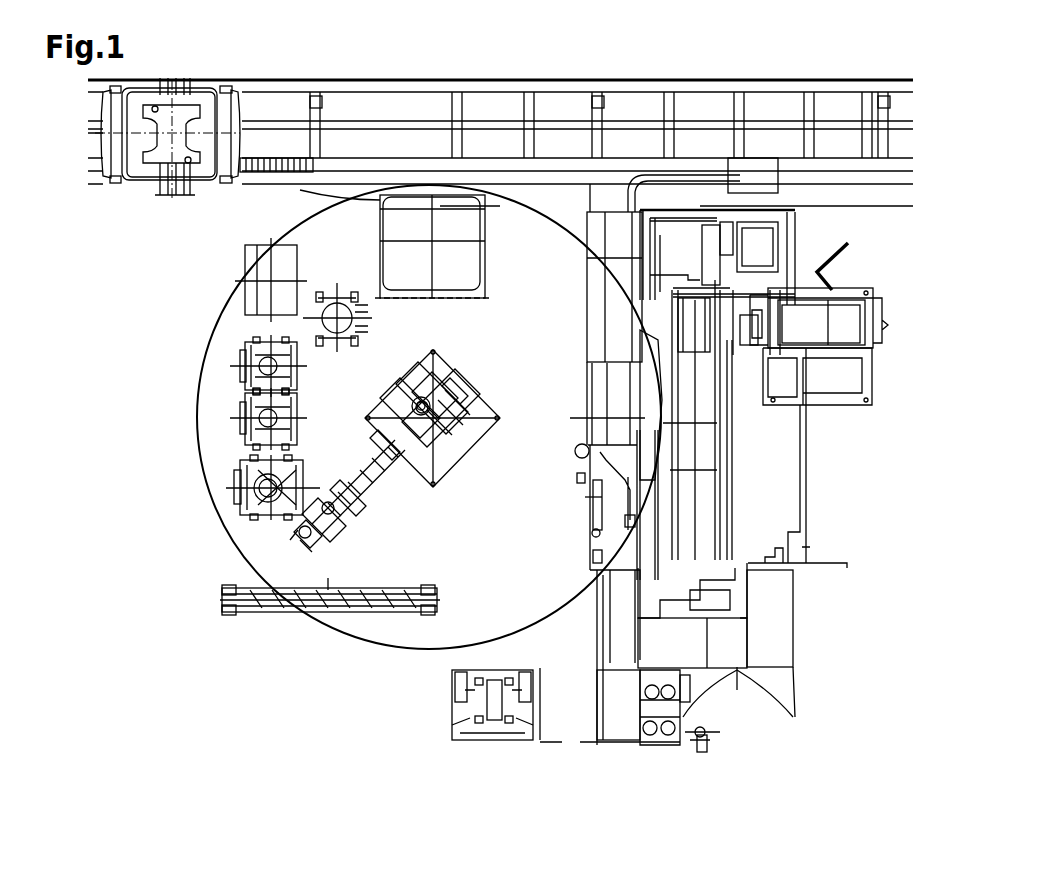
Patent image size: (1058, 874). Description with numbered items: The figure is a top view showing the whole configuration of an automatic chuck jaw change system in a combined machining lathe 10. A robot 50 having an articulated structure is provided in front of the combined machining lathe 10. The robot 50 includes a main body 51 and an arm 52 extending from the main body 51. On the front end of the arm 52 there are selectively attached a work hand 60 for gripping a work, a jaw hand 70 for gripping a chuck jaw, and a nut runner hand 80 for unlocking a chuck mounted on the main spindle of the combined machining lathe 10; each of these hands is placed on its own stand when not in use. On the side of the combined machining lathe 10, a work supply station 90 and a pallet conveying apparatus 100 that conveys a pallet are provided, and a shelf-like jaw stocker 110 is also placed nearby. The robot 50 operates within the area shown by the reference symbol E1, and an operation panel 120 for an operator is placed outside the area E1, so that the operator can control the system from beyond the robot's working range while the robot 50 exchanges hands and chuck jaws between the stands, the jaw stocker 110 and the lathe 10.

The combined machining lathe 10 is at (822, 497).
The robot 50 is at (462, 465).
The main body 51 is at (450, 396).
The arm 52 is at (360, 497).
The work hand 60 is at (245, 505).
The jaw hand 70 is at (240, 414).
The nut runner hand 80 is at (240, 362).
The work supply station 90 is at (470, 263).
The pallet conveying apparatus 100 is at (137, 174).
The jaw stocker 110 is at (262, 612).
The operation panel 120 is at (478, 741).
The area E1 is at (199, 462).